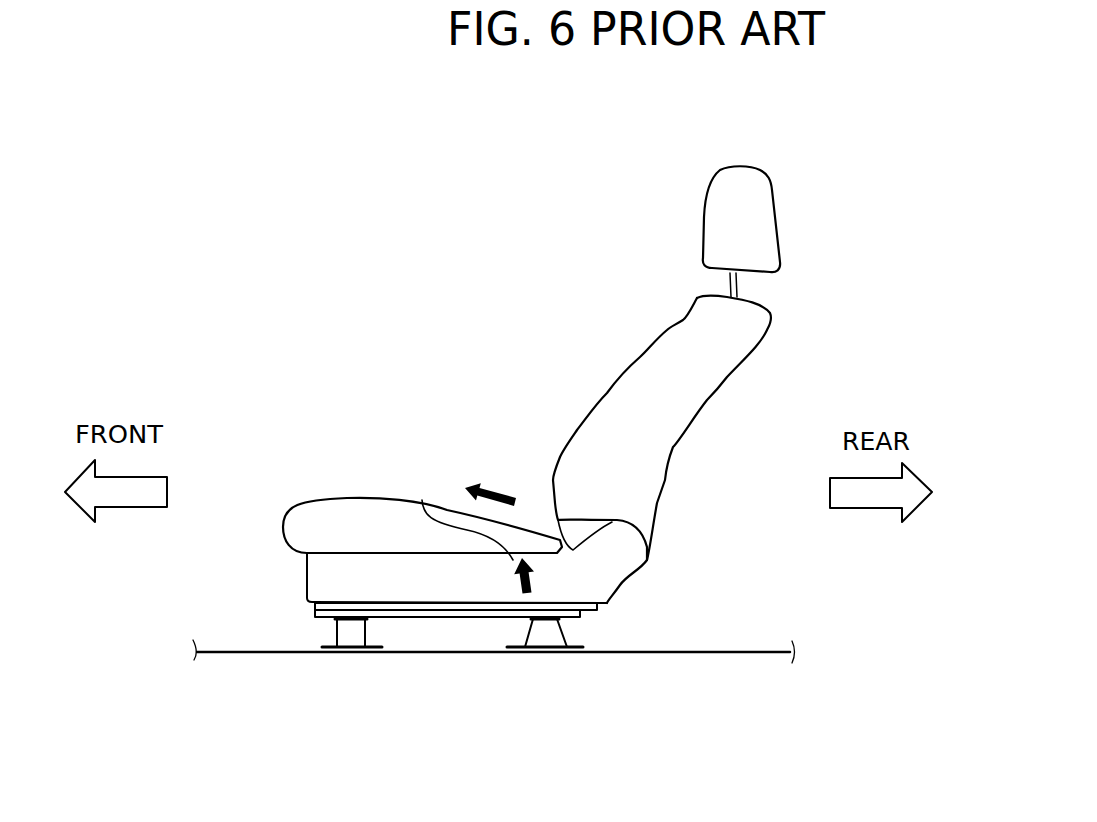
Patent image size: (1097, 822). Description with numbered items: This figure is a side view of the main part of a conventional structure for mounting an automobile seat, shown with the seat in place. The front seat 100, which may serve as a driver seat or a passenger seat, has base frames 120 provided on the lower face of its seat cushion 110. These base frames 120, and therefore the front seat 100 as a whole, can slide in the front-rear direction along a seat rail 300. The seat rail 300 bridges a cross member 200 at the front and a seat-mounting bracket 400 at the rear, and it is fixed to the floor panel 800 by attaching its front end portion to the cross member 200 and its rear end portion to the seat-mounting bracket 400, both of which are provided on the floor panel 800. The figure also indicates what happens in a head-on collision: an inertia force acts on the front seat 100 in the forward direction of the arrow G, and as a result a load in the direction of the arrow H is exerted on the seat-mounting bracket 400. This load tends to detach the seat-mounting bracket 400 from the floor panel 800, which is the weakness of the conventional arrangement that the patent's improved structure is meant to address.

The front seat 100 is at (722, 407).
The seat cushion 110 is at (298, 515).
The base frames 120 is at (435, 603).
The cross member 200 is at (323, 630).
The seat rail 300 is at (405, 617).
The seat-mounting bracket 400 is at (583, 640).
The floor panel 800 is at (750, 652).
The arrow H is at (422, 500).
The arrow G is at (490, 482).